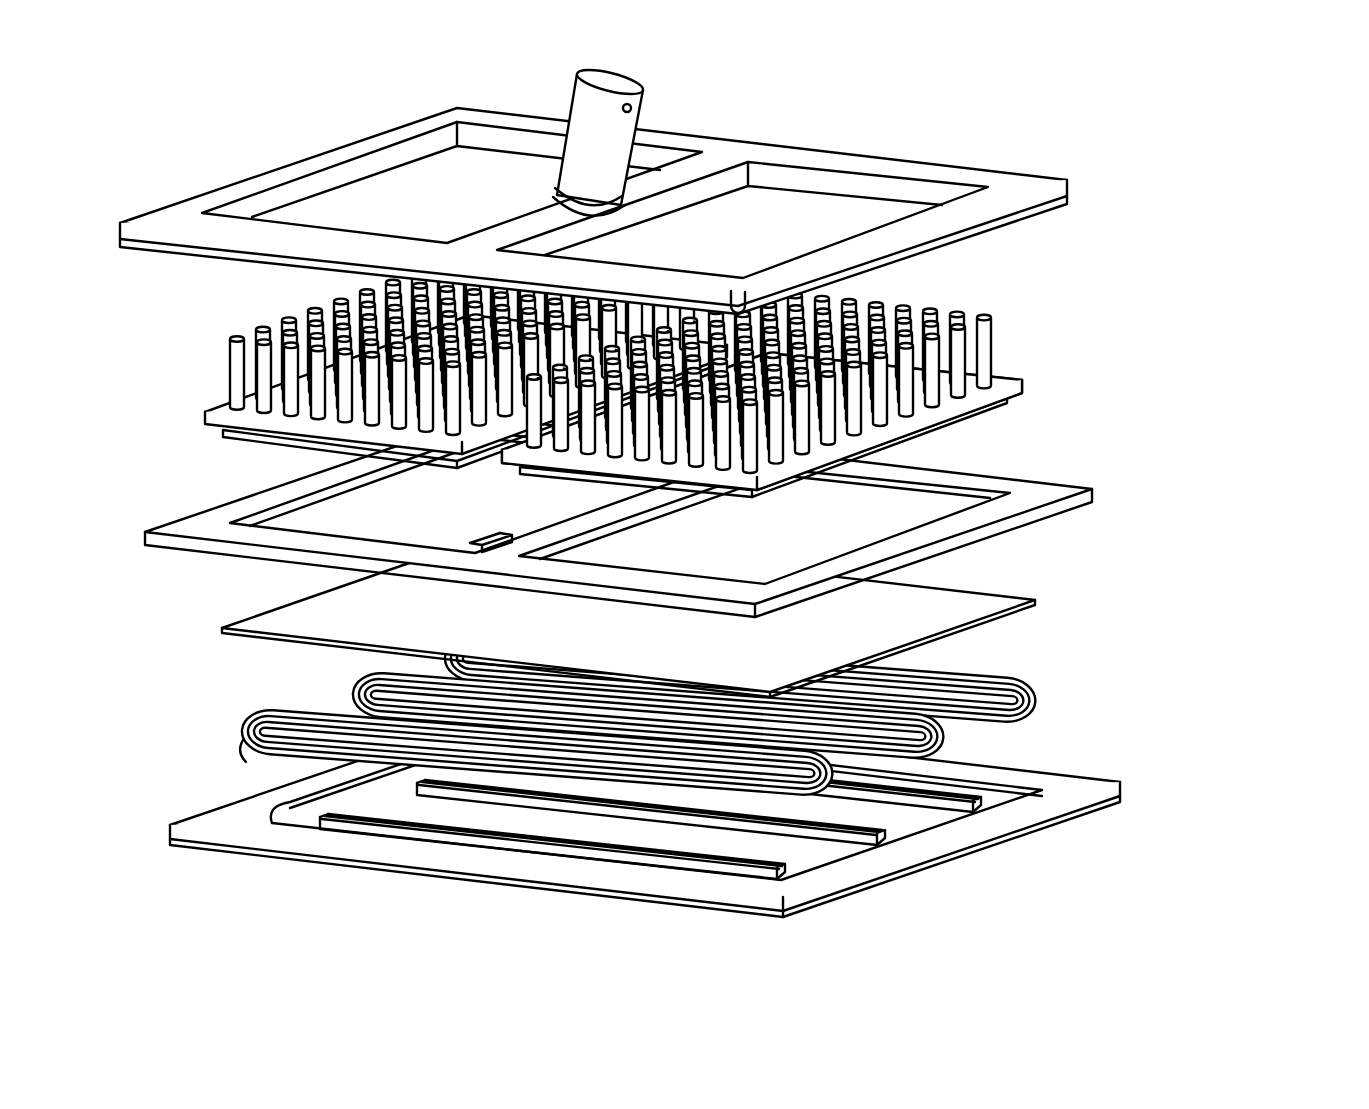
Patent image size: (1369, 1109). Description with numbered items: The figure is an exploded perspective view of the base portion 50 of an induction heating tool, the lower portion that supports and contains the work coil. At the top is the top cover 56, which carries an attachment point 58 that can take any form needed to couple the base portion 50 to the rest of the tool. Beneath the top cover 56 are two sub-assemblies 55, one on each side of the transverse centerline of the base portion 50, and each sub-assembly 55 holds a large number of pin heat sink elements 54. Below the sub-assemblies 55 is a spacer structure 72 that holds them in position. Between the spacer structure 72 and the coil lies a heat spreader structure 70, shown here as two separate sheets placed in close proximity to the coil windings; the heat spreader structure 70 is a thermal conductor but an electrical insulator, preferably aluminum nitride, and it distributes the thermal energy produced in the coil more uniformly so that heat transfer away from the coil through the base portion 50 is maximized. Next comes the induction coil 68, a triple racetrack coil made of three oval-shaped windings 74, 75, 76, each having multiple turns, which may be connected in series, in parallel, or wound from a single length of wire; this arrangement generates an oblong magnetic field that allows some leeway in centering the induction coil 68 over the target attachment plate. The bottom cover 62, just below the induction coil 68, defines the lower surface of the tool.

The base portion 50 is at (1220, 193).
The pin heat sink elements 54 is at (228, 355).
The sub-assembly 55 is at (194, 424).
The top cover 56 is at (1025, 180).
The attachment point 58 is at (582, 98).
The bottom cover 62 is at (1085, 783).
The induction coil 68 is at (1082, 704).
The heat spreader structure 70 is at (270, 620).
The spacer structure 72 is at (1060, 490).
The oval-shaped winding 74 is at (1030, 700).
The oval-shaped winding 75 is at (370, 682).
The oval-shaped winding 76 is at (243, 748).